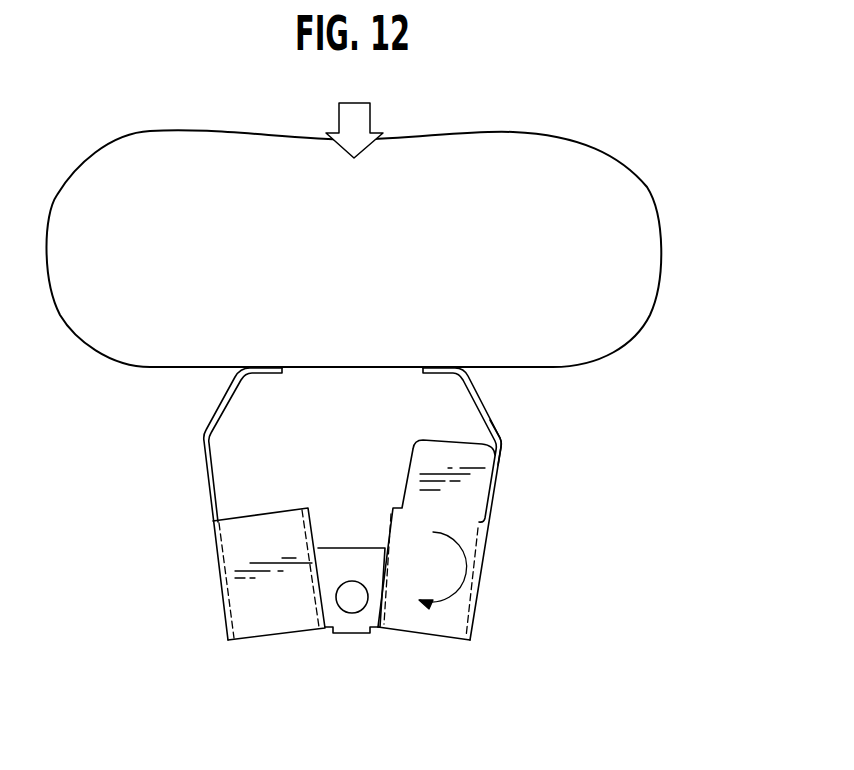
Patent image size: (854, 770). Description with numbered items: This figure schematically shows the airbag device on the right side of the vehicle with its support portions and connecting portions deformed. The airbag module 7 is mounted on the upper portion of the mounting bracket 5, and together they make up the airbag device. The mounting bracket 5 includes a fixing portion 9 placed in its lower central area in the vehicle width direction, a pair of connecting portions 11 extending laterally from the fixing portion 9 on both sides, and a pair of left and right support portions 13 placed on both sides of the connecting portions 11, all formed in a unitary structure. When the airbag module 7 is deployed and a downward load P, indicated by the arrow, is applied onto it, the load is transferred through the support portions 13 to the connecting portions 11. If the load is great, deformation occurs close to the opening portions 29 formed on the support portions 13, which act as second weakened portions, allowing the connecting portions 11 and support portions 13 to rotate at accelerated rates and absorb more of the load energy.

The mounting bracket 5 is at (205, 509).
The airbag module 7 is at (645, 178).
The fixing portion 9 is at (350, 563).
The connecting portion 11 is at (420, 463).
The support portion 13 is at (491, 405).
The opening portion 29 is at (500, 440).